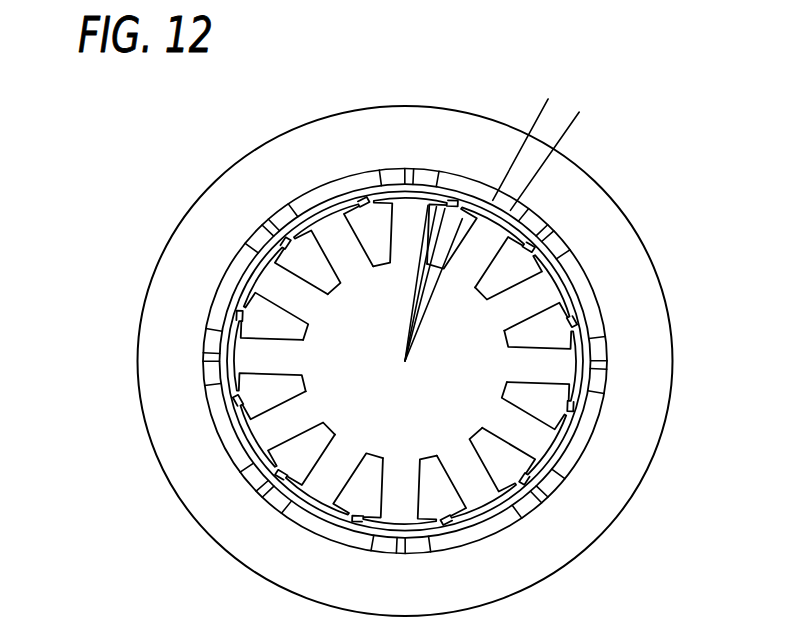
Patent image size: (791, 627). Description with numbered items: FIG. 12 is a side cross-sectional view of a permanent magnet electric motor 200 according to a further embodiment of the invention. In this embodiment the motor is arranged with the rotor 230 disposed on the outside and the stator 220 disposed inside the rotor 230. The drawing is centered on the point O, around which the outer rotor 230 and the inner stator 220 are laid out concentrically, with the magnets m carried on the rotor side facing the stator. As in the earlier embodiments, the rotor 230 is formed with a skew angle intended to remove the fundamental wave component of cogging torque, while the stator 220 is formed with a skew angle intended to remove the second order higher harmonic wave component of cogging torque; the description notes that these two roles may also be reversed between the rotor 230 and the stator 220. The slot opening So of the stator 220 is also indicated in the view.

The permanent magnet electric motor 200 is at (677, 118).
The rotor 230 is at (649, 256).
The stator 220 is at (560, 430).
The permanent magnet m is at (563, 140).
The slot opening So is at (444, 205).
The center axis O is at (399, 377).